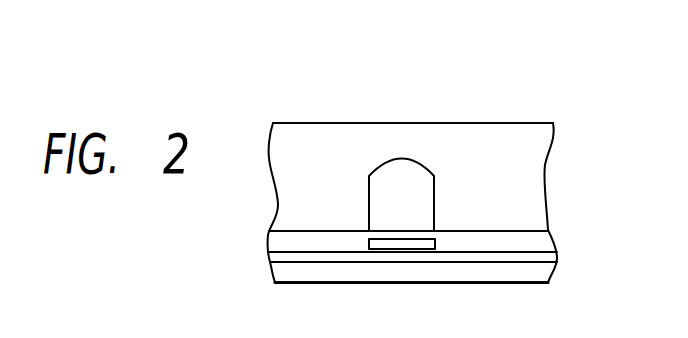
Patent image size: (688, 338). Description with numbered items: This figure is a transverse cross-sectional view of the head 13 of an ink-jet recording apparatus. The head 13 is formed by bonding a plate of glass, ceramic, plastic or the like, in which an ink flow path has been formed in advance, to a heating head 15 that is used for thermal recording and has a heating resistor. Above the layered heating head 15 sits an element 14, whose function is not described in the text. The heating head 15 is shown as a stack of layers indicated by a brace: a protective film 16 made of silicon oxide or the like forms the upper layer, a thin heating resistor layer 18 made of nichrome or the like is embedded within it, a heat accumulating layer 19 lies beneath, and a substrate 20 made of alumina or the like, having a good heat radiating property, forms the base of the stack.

The head 13 is at (316, 114).
The electrode 14 is at (400, 157).
The heating head 15 is at (443, 239).
The protective film 16 is at (479, 238).
The heating resistor layer 18 is at (437, 247).
The heat accumulating layer 19 is at (520, 258).
The substrate 20 is at (485, 272).